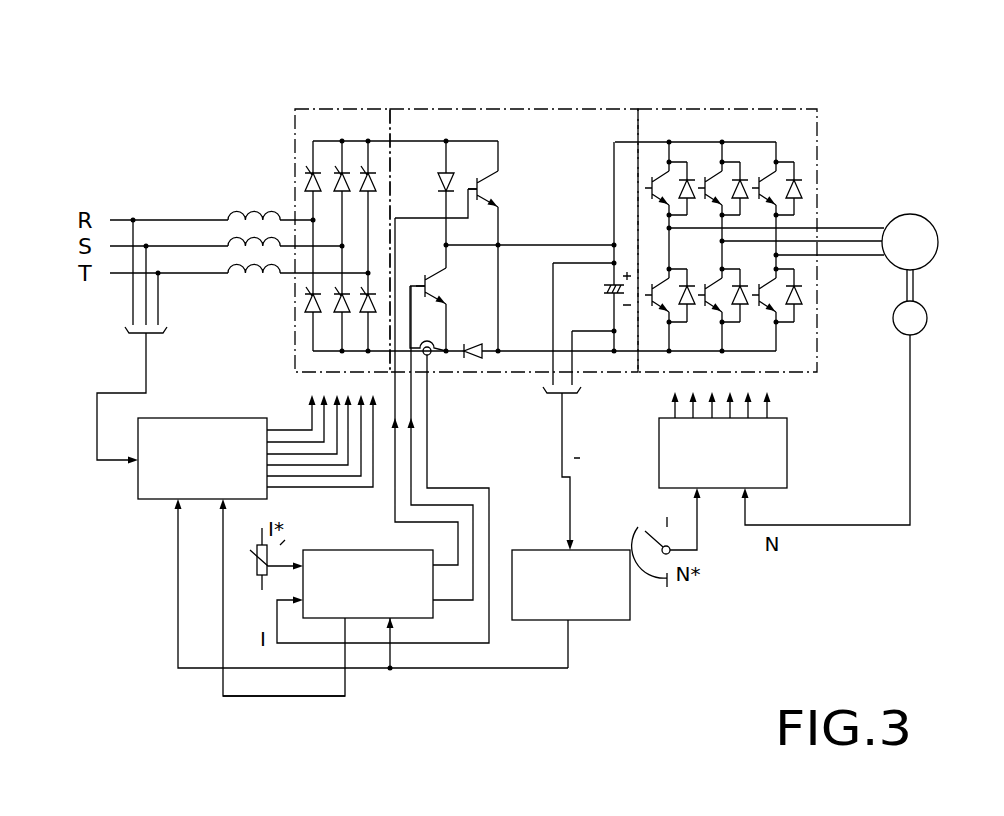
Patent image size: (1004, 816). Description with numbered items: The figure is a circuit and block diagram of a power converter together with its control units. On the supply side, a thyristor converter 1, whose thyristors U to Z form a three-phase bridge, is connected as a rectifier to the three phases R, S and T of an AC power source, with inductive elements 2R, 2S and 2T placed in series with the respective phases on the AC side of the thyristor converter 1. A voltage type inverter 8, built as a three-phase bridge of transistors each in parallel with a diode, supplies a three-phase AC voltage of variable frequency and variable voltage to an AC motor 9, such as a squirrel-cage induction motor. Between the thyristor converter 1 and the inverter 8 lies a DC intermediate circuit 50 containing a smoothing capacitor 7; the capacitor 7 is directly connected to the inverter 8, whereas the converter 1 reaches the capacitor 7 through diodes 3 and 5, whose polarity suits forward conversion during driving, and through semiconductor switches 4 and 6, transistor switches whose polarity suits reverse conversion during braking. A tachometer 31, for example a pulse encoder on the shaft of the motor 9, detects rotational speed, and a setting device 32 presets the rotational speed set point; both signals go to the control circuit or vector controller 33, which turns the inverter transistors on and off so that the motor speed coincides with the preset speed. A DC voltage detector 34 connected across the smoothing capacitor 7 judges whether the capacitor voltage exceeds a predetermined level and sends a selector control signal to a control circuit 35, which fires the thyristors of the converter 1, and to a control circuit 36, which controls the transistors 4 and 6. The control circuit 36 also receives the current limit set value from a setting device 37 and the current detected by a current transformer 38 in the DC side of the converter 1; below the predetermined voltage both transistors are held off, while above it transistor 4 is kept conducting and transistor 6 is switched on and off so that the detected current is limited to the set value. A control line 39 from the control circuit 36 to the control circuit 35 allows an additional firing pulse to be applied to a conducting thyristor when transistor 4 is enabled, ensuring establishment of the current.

The thyristor converter 1 is at (320, 108).
The inductive element 2R is at (245, 212).
The inductive element 2S is at (238, 248).
The inductive element 2T is at (253, 285).
The diode 3 is at (437, 186).
The semiconductor switch 4 is at (428, 274).
The diode 5 is at (474, 343).
The semiconductor switch 6 is at (500, 186).
The smoothing capacitor 7 is at (604, 289).
The voltage type inverter 8 is at (819, 150).
The AC motor 9 is at (926, 222).
The tachometer 31 is at (900, 333).
The setting device 32 is at (660, 585).
The control circuit 33 is at (787, 452).
The DC voltage detector 34 is at (598, 549).
The control circuit 35 is at (210, 418).
The control circuit 36 is at (336, 550).
The setting device 37 is at (256, 571).
The current transformer 38 is at (426, 345).
The control line 39 is at (268, 698).
The DC intermediate circuit 50 is at (488, 108).